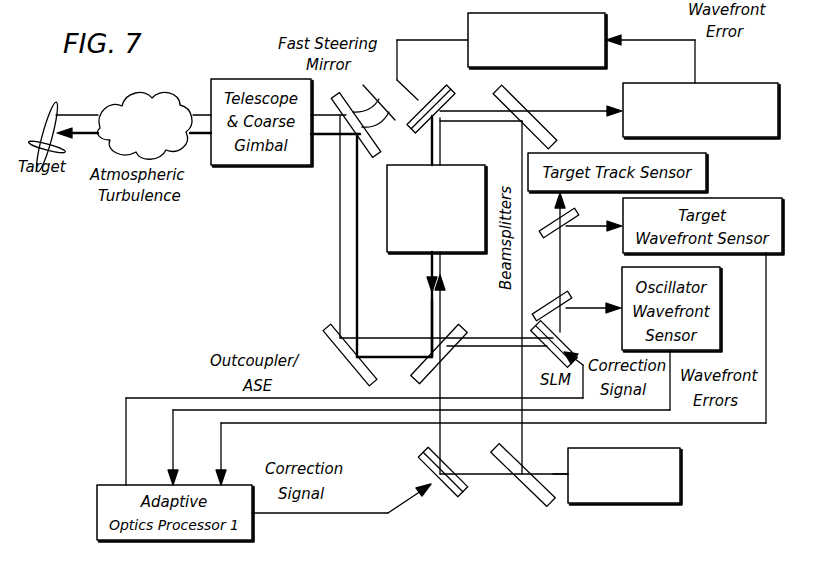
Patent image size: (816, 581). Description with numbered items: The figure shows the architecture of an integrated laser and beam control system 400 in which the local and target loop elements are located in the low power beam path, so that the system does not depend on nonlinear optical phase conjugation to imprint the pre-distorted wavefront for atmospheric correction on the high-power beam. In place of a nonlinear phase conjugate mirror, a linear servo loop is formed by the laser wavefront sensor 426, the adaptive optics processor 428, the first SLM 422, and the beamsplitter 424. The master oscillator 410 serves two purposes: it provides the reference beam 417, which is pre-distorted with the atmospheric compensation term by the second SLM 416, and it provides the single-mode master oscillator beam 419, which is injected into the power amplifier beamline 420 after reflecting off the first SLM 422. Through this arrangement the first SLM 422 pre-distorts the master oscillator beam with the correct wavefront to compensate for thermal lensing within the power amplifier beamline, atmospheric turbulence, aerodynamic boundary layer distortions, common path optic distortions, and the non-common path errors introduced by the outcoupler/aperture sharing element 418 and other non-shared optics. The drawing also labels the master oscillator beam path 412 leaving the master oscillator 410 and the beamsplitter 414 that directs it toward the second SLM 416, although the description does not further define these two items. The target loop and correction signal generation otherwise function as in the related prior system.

The integrated laser and beam control system 400 is at (186, 294).
The master oscillator 410 is at (680, 474).
The master oscillator beam 412 is at (545, 492).
The beamsplitter 414 is at (508, 496).
The second SLM 416 is at (430, 450).
The reference beam 417 is at (443, 389).
The outcoupler/aperture sharing element 418 is at (424, 372).
The single-mode master oscillator beam 419 is at (522, 445).
The power amplifier beamline 420 is at (470, 253).
The first SLM 422 is at (418, 128).
The beamsplitter 424 is at (524, 100).
The laser wavefront sensor 426 is at (752, 83).
The adaptive optics processor 428 is at (468, 22).